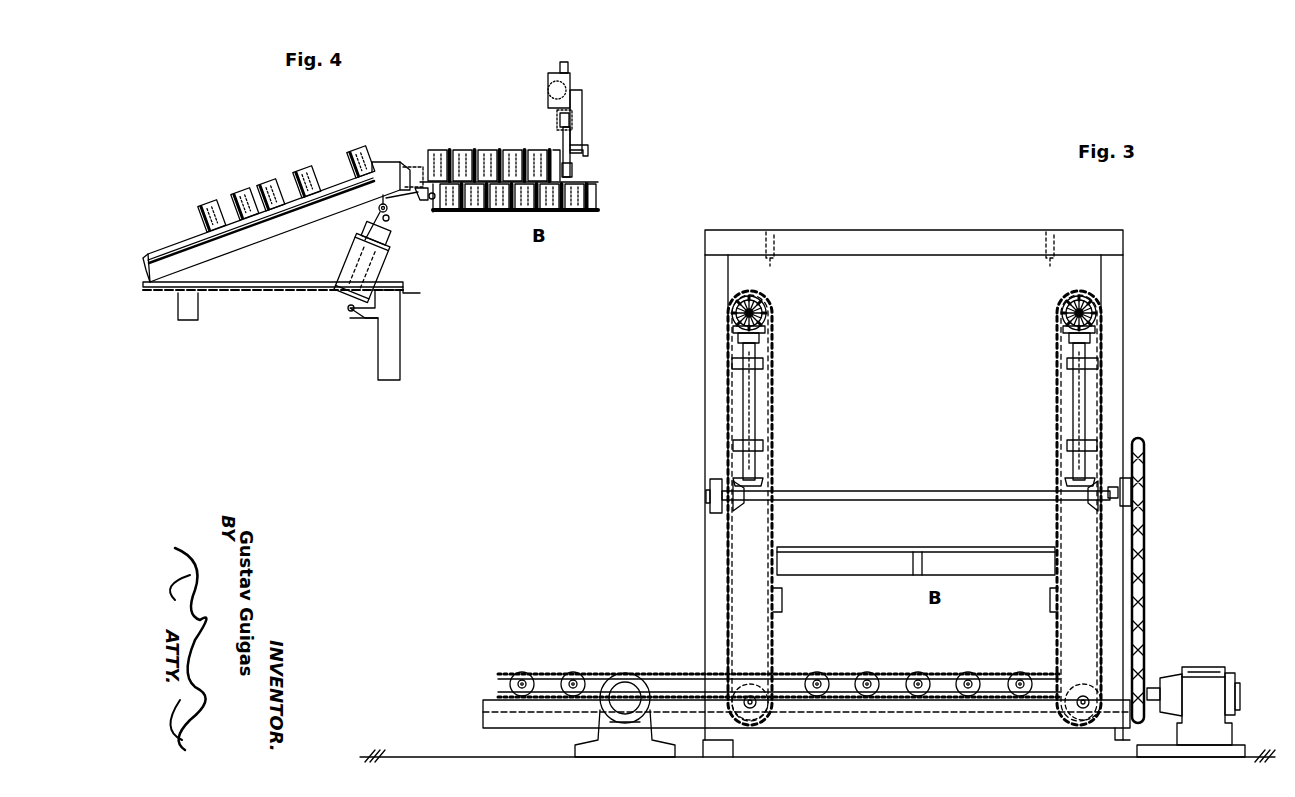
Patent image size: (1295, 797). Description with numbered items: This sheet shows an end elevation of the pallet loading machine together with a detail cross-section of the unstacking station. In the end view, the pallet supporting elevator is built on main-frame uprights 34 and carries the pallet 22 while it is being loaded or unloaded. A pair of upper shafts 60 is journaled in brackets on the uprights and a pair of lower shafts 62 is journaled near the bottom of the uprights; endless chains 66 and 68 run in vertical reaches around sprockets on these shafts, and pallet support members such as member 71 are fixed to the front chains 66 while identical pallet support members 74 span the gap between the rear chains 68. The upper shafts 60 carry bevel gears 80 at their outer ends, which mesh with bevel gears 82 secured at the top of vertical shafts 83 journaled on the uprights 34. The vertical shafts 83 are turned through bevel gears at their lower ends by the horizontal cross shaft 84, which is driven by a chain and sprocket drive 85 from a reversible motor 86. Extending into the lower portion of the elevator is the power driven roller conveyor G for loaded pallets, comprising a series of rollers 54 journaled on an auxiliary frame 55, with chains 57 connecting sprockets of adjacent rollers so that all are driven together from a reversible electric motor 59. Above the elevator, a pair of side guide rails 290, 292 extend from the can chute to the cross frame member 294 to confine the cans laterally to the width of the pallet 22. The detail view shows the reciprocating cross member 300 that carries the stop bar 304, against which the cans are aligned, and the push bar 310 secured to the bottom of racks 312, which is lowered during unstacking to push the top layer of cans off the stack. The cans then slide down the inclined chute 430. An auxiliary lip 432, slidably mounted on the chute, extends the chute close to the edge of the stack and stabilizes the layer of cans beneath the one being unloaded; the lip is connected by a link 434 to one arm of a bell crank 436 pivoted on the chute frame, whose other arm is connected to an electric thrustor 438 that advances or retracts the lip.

In FIG. 3, the pallet 22 is at (866, 572).
In FIG. 4, the upright 34 is at (392, 362).
In FIG. 3, the roller 54 is at (577, 670).
In FIG. 3, the auxiliary frame 55 is at (548, 714).
In FIG. 3, the chain 57 is at (836, 672).
In FIG. 3, the reversible electric motor 59 is at (618, 672).
In FIG. 3, the upper shaft 60 is at (768, 314).
In FIG. 3, the lower shaft 62 is at (768, 710).
In FIG. 3, the endless chain 66 is at (1058, 393).
In FIG. 3, the endless chain 68 is at (771, 410).
In FIG. 3, the pallet support member 71 is at (1052, 592).
In FIG. 3, the pallet support member 74 is at (783, 600).
In FIG. 3, the bevel gear 80 is at (760, 300).
In FIG. 3, the bevel gear 82 is at (740, 338).
In FIG. 3, the vertical shaft 83 is at (746, 388).
In FIG. 3, the horizontal cross shaft 84 is at (905, 490).
In FIG. 3, the chain and sprocket drive 85 is at (1141, 580).
In FIG. 3, the reversible motor 86 is at (1205, 670).
In FIG. 3, the side guide rail 290 is at (775, 234).
In FIG. 3, the side guide rail 292 is at (1046, 234).
In FIG. 3, the cross frame member 294 is at (880, 240).
In FIG. 4, the cross member 300 is at (557, 122).
In FIG. 4, the stop bar 304 is at (589, 154).
In FIG. 4, the push bar 310 is at (582, 182).
In FIG. 4, the rack 312 is at (568, 63).
In FIG. 4, the inclined chute 430 is at (200, 250).
In FIG. 4, the auxiliary lip 432 is at (428, 202).
In FIG. 4, the link 434 is at (428, 205).
In FIG. 4, the bell crank 436 is at (416, 196).
In FIG. 4, the electric thrustor 438 is at (345, 262).
In FIG. 3, the roller conveyor G is at (548, 645).